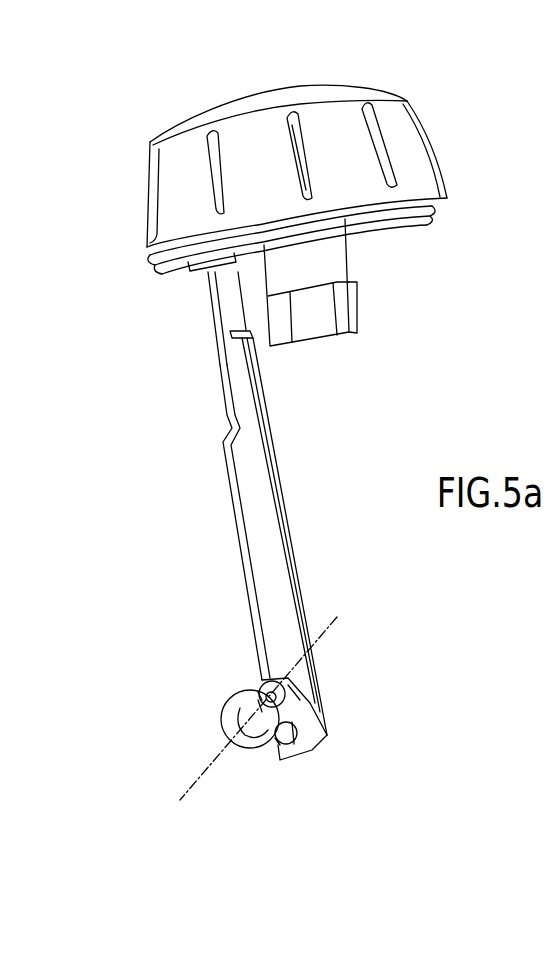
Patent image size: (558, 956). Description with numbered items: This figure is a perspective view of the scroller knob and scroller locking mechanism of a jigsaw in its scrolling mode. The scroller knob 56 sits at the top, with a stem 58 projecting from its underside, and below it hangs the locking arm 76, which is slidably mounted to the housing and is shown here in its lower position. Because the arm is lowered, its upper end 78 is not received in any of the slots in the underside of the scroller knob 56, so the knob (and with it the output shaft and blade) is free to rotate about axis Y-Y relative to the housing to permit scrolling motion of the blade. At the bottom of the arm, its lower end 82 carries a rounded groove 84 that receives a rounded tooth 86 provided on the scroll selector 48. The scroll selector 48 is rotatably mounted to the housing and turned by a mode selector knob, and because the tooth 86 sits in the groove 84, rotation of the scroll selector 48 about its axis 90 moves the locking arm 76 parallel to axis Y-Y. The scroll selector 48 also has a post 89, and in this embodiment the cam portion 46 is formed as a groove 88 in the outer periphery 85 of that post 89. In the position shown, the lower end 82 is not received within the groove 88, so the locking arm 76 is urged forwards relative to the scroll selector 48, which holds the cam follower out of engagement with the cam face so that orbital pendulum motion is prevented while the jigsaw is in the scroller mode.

The scroller knob 56 is at (233, 112).
The stem 58 is at (350, 291).
The upper end of locking arm 78 is at (232, 310).
The locking arm 76 is at (263, 447).
The axis 90 is at (330, 632).
The cam portion 46 is at (230, 745).
The groove 88 is at (270, 727).
The scroll selector 48 is at (260, 688).
The post 89 is at (258, 692).
The outer periphery 85 is at (288, 685).
The lower end of locking arm 82 is at (305, 711).
The rounded groove 84 is at (298, 750).
The rounded tooth 86 is at (277, 736).